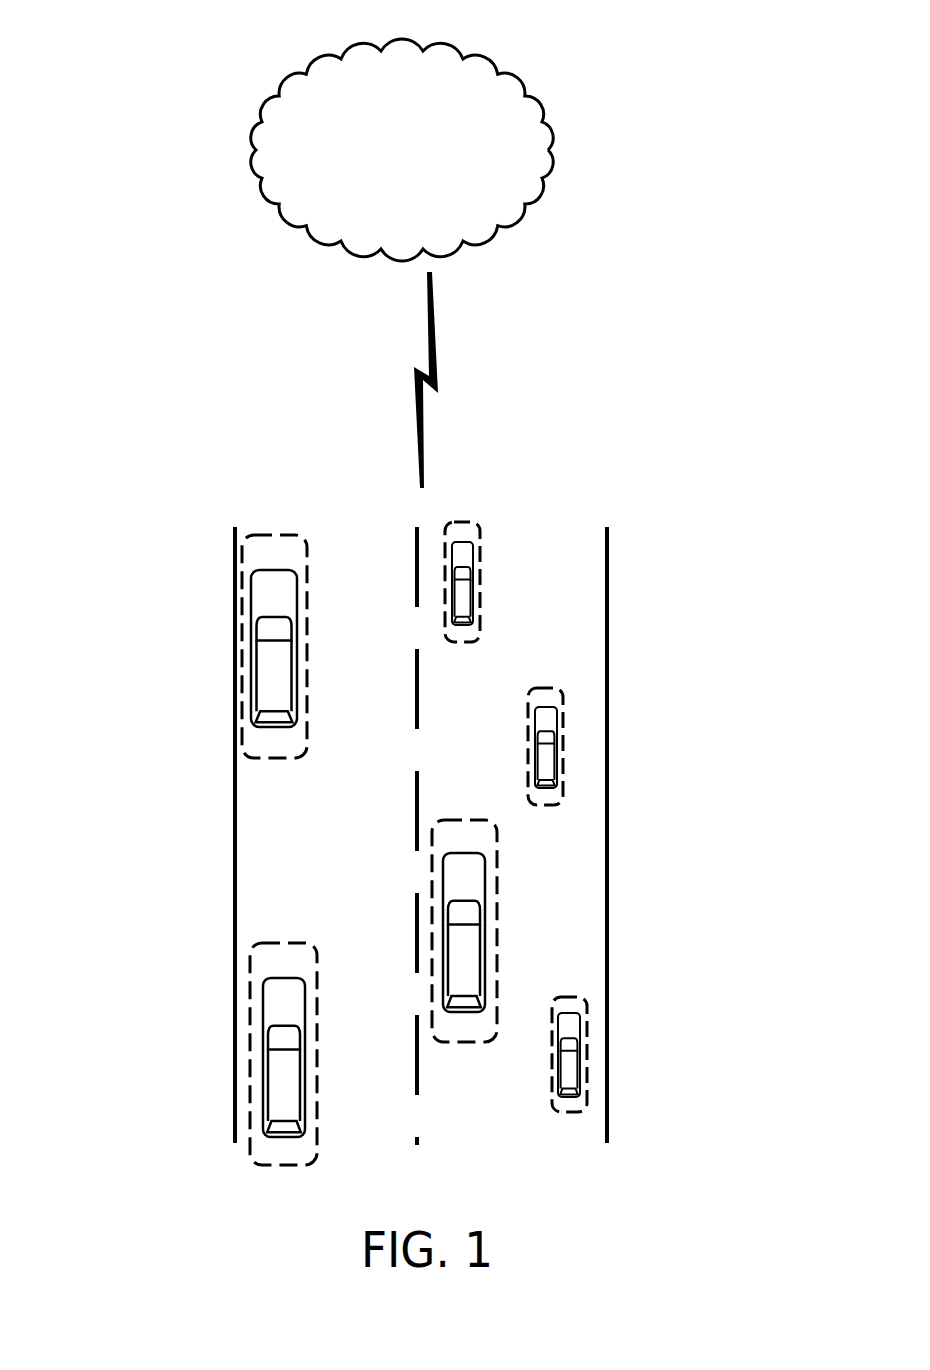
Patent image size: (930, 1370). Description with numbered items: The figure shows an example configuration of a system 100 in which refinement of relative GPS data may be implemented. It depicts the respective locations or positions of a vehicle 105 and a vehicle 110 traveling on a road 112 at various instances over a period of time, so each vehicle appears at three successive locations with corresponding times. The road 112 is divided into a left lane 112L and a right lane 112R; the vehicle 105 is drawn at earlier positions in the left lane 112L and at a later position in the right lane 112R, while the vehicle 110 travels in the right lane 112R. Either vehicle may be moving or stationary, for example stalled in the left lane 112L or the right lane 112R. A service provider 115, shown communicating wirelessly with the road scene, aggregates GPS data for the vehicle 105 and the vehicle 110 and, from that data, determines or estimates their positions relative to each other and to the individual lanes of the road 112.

The system 100 is at (107, 65).
The service provider 115 is at (402, 263).
The road 112 is at (421, 836).
The left lane 112L is at (319, 1198).
The right lane 112R is at (526, 1165).
The vehicle 105 is at (425, 831).
The vehicle 110 is at (626, 812).